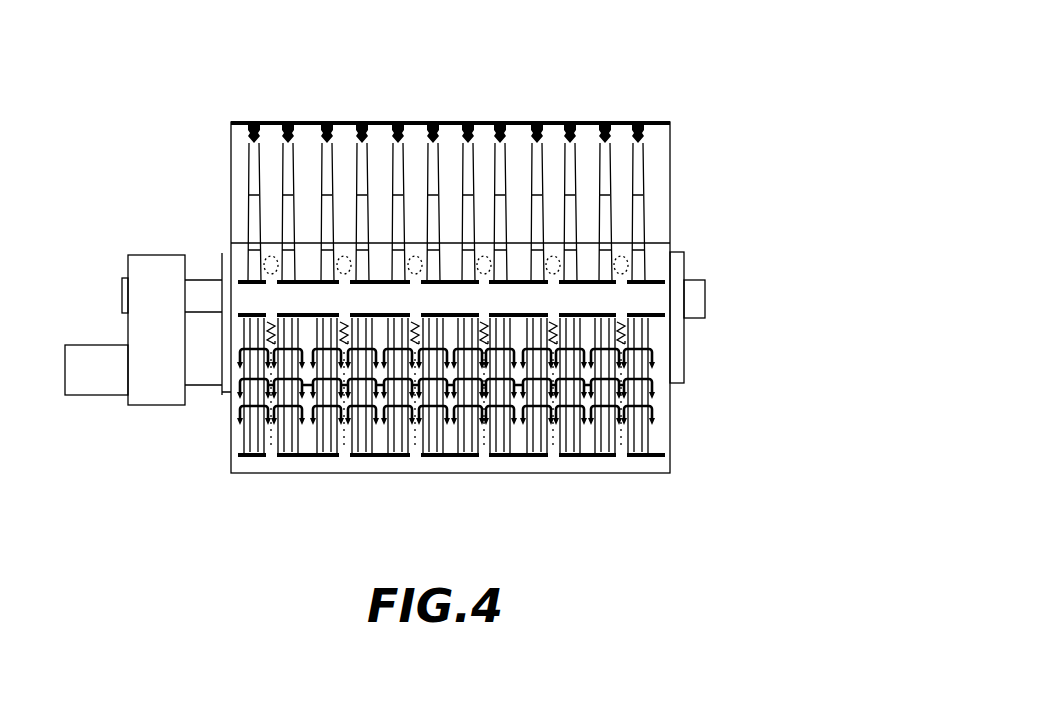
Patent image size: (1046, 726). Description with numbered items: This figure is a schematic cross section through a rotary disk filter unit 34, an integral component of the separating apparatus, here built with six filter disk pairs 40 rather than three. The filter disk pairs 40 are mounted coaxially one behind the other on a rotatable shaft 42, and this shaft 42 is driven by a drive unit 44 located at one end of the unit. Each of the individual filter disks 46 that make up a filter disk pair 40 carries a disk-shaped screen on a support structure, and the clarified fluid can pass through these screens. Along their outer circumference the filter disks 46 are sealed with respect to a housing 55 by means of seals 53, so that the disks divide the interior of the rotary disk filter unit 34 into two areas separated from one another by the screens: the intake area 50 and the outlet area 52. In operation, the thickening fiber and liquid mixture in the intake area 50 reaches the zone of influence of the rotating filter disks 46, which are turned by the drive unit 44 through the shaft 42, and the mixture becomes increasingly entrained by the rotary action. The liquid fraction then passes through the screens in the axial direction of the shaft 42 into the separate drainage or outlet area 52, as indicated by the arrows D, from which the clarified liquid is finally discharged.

The rotary disk filter unit 34 is at (662, 95).
The housing 55 is at (250, 122).
The seals 53 is at (527, 122).
The filter disk pairs 40 is at (310, 126).
The filter disks 46 is at (645, 185).
The rotatable shaft 42 is at (642, 298).
The drive unit 44 is at (153, 312).
The intake area 50 is at (487, 450).
The outlet area 52 is at (660, 445).
The arrows D is at (322, 440).